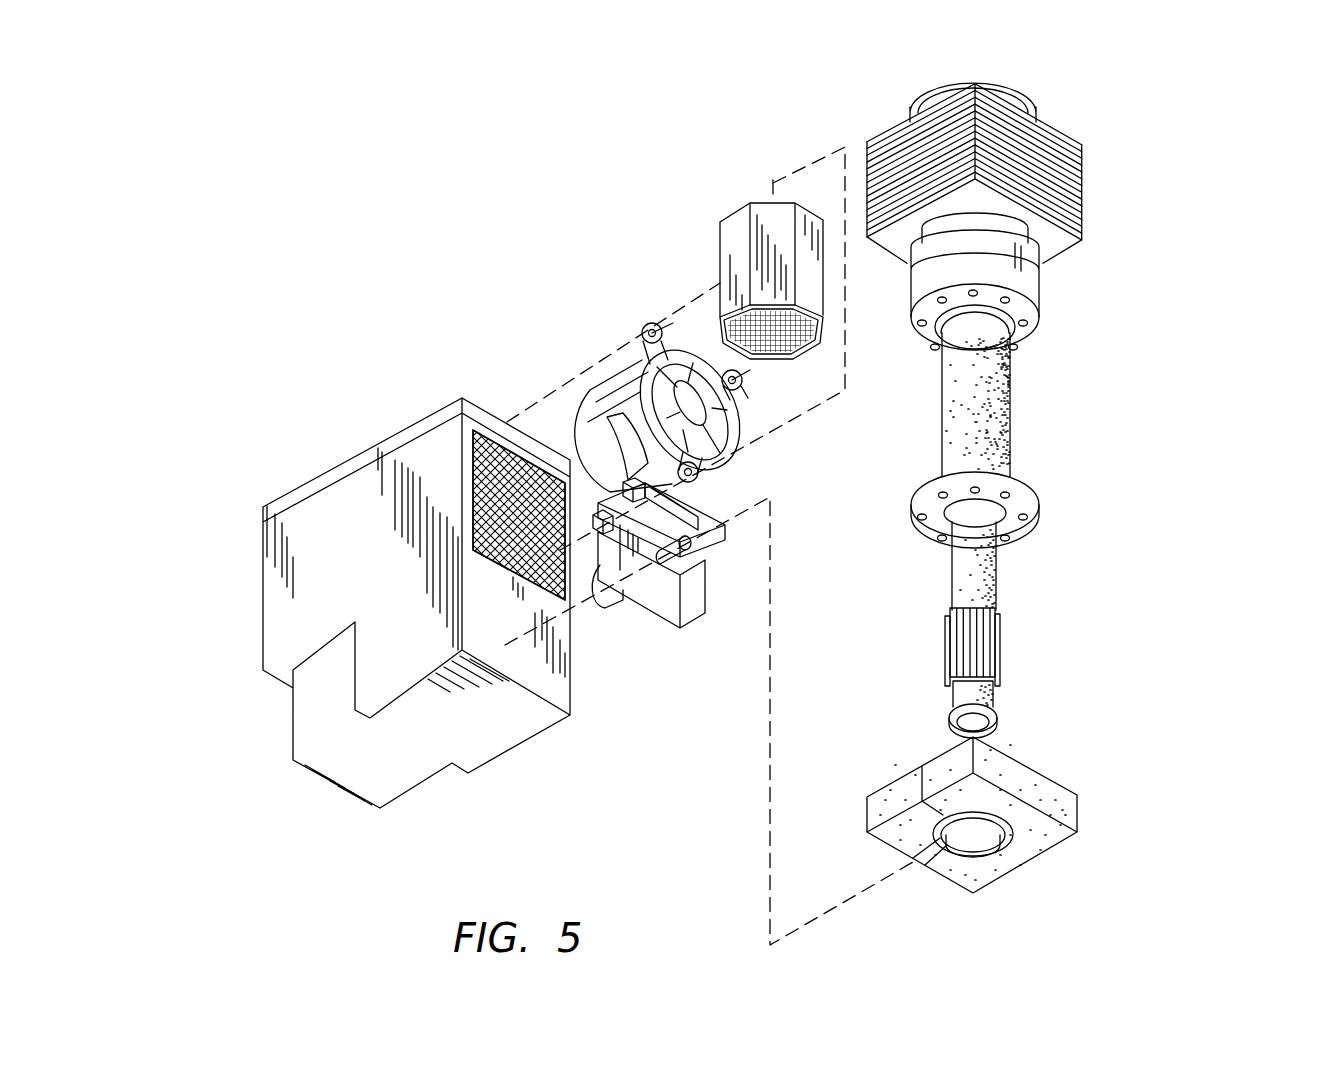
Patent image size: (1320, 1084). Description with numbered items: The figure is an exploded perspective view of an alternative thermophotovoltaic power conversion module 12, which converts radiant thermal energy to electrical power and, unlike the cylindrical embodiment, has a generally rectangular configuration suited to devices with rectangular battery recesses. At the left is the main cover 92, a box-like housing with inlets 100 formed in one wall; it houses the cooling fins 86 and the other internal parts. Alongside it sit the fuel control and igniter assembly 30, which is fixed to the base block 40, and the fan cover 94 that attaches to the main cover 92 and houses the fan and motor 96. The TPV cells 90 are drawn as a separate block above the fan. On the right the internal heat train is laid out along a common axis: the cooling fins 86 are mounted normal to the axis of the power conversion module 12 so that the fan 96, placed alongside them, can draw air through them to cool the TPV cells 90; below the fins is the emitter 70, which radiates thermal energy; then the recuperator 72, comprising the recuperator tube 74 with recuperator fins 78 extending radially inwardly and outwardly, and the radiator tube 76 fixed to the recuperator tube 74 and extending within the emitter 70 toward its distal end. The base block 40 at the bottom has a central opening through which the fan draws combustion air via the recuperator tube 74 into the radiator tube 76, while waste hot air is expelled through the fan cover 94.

The thermophotovoltaic power conversion module 12 is at (1152, 288).
The fuel control and igniter assembly 30 is at (657, 603).
The base block 40 is at (1023, 778).
The emitter 70 is at (990, 428).
The recuperator 72 is at (993, 645).
The recuperator tube 74 is at (993, 698).
The radiator tube 76 is at (988, 572).
The recuperator fins 78 is at (947, 650).
The cooling fins 86 is at (1083, 183).
The TPV cells 90 is at (738, 230).
The main cover 92 is at (357, 508).
The fan cover 94 is at (610, 397).
The fan and motor 96 is at (700, 442).
The inlets 100 is at (507, 483).